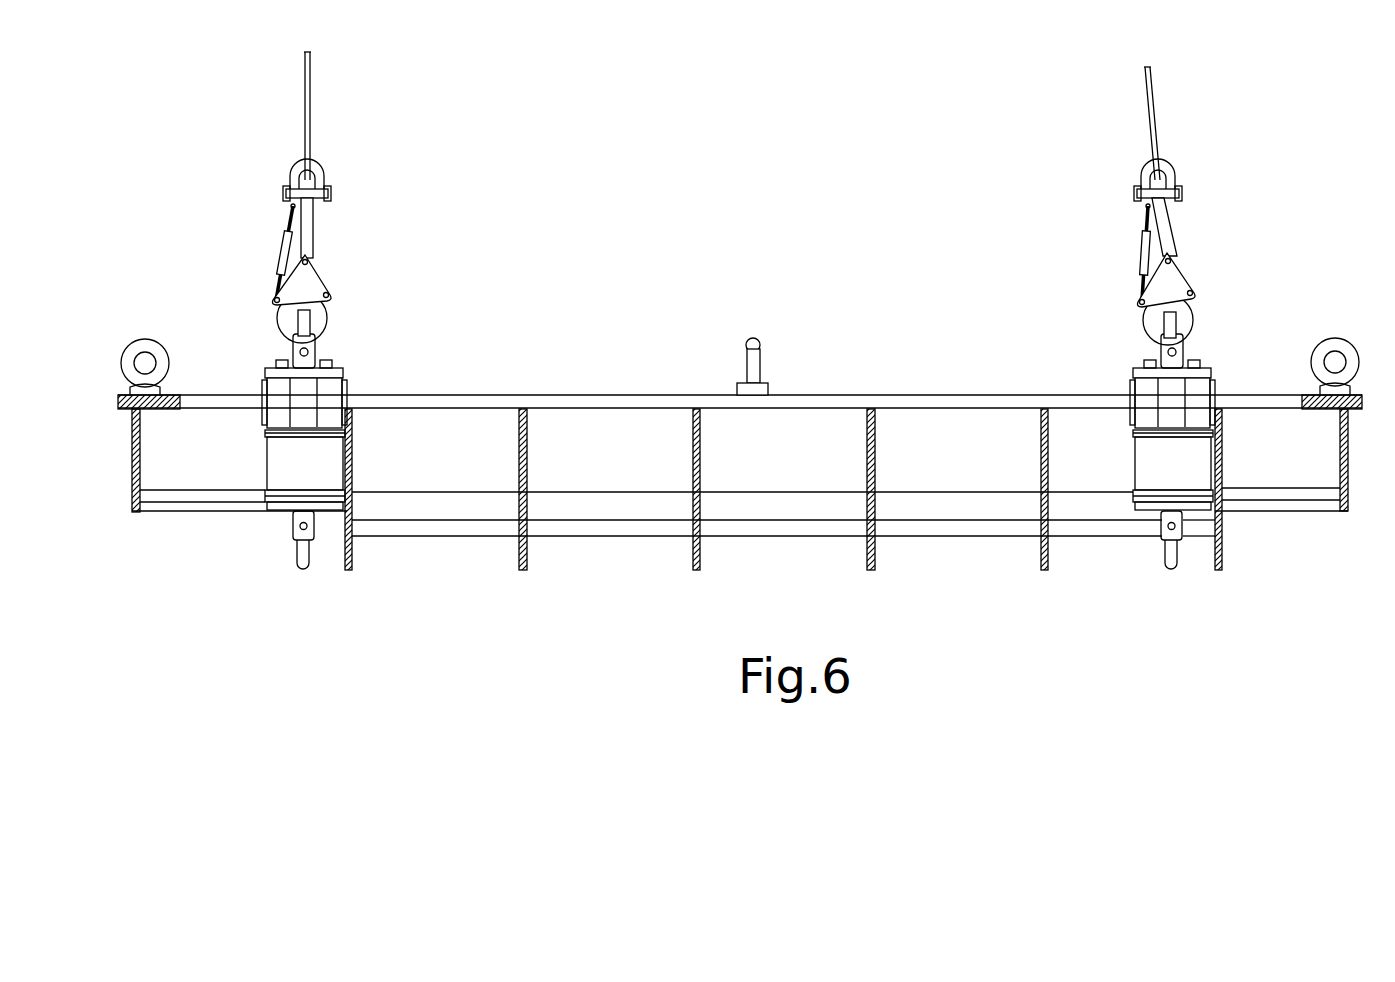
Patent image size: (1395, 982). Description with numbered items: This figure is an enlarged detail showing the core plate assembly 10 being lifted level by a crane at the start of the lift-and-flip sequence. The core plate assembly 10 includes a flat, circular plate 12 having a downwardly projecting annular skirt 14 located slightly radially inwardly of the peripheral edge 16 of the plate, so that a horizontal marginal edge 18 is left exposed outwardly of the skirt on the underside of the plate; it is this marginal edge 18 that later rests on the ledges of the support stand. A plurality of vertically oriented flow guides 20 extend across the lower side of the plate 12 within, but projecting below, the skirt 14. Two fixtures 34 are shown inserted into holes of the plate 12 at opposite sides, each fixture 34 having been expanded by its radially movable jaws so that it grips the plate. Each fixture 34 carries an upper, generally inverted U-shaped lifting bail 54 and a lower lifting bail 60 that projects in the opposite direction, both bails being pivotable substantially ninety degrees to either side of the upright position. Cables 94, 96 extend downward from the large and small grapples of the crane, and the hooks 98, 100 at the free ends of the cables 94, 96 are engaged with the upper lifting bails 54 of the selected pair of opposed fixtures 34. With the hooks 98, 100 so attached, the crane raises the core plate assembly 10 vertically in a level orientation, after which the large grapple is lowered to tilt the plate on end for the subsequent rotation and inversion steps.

The core plate assembly 10 is at (928, 378).
The plate 12 is at (504, 398).
The skirt 14 is at (1340, 440).
The peripheral edge 16 is at (1365, 400).
The marginal edge 18 is at (123, 410).
The flow guides 20 is at (527, 546).
The fixture 34 is at (256, 455).
The lifting bail 54 is at (305, 319).
The lifting bail 60 is at (299, 548).
The cable 94 is at (328, 116).
The cable 96 is at (1157, 99).
The hook 98 is at (258, 300).
The hook 100 is at (1212, 276).